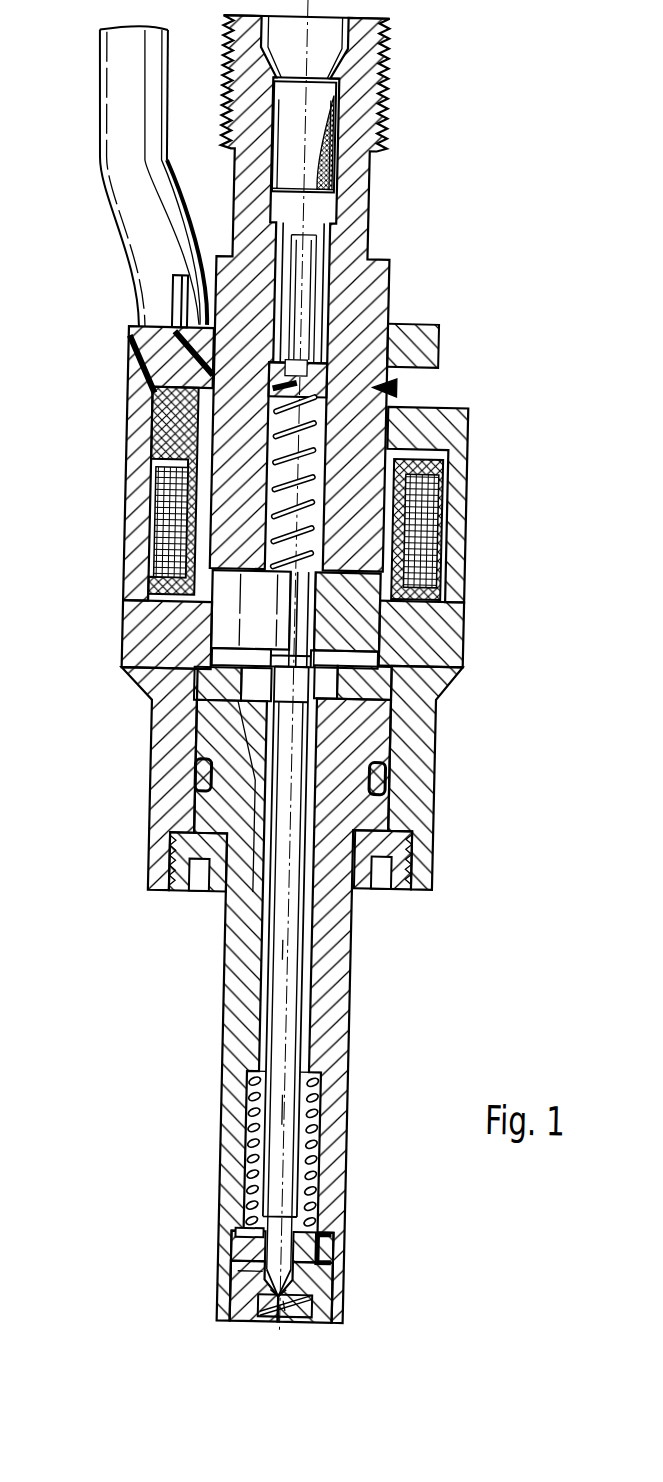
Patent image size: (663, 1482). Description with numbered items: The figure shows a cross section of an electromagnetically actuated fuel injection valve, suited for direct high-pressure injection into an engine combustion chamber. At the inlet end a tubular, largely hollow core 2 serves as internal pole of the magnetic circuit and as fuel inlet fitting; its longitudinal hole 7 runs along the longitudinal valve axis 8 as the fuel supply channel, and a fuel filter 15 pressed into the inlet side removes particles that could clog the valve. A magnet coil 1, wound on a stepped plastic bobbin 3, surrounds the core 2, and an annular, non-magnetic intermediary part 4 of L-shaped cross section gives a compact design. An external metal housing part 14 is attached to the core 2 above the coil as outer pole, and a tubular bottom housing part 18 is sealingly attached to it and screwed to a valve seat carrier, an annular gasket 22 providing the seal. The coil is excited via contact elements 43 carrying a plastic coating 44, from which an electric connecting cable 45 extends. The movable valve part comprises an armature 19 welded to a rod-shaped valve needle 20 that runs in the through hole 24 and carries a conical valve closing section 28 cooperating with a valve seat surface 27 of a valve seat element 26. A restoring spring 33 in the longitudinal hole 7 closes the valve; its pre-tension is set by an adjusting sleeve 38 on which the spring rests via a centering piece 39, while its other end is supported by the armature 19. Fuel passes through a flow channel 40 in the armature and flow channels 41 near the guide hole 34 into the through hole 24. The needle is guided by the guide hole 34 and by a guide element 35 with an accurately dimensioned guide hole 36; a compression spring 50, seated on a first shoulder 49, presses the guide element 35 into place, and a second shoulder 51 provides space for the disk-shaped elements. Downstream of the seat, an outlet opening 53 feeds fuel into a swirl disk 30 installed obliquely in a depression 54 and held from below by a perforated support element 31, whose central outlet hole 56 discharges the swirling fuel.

The magnet coil 1 is at (166, 510).
The core 2 is at (376, 266).
The bobbin 3 is at (410, 478).
The intermediary part 4 is at (401, 518).
The longitudinal hole 7 is at (405, 385).
The longitudinal valve axis 8 is at (307, 1111).
The housing part 14 is at (459, 429).
The fuel filter 15 is at (334, 114).
The bottom housing part 18 is at (433, 715).
The armature 19 is at (230, 625).
The valve needle 20 is at (296, 999).
The annular gasket 22 is at (215, 779).
The through hole 24 is at (317, 960).
The valve seat element 26 is at (271, 1294).
The valve seat surface 27 is at (362, 992).
The valve closing section 28 is at (321, 1290).
The swirl disk 30 is at (308, 1318).
The support element 31 is at (338, 1320).
The restoring spring 33 is at (276, 418).
The guide hole 34 is at (316, 732).
The guide element 35 is at (354, 1243).
The guide hole 36 is at (323, 1223).
The adjusting sleeve 38 is at (333, 283).
The centering piece 39 is at (338, 370).
The flow channel 40 is at (345, 622).
The flow channel 41 is at (269, 726).
The contact element 43 is at (183, 293).
The plastic coating 44 is at (148, 366).
The electric connecting cable 45 is at (112, 81).
The first shoulder 49 is at (278, 1091).
The compression spring 50 is at (275, 1179).
The second shoulder 51 is at (268, 1233).
The outlet opening 53 is at (199, 1274).
The depression 54 is at (288, 1323).
The central outlet hole 56 is at (318, 1317).